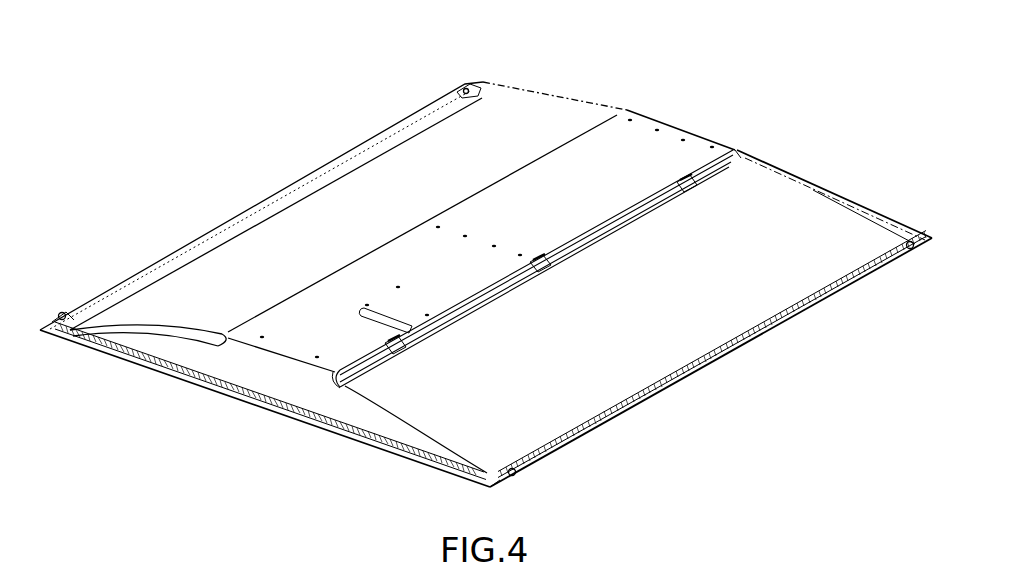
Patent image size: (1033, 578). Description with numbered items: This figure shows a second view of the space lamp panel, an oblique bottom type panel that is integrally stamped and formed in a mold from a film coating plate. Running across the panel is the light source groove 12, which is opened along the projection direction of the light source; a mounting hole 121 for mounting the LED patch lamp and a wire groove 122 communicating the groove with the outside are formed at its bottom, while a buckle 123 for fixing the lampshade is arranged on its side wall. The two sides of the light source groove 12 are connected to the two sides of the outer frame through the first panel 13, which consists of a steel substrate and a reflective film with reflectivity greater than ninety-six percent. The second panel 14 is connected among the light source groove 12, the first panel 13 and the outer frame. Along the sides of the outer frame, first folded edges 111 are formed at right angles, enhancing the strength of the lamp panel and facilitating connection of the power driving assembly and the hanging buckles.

The first folded edge 111 is at (862, 210).
The light source groove 12 is at (607, 192).
The mounting hole 121 is at (717, 143).
The wire groove 122 is at (413, 330).
The buckle 123 is at (540, 267).
The first panel 13 is at (553, 117).
The second panel 14 is at (265, 380).